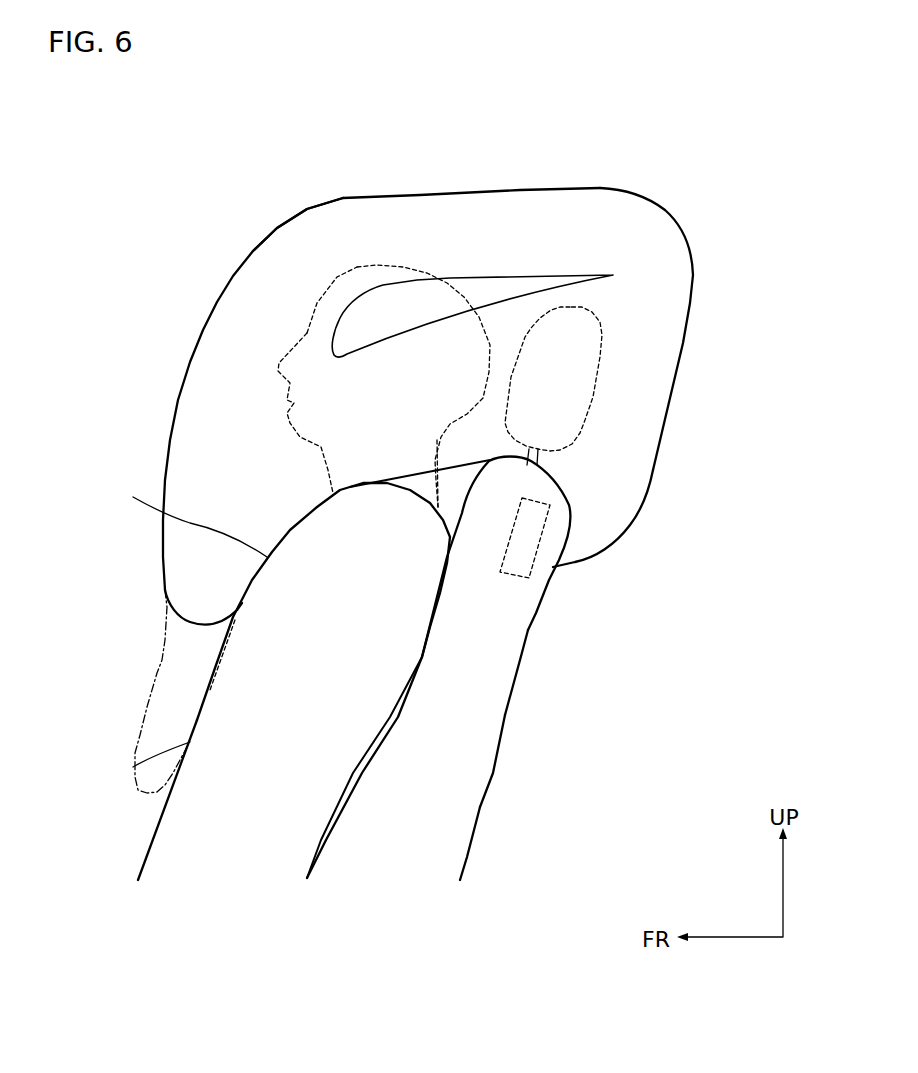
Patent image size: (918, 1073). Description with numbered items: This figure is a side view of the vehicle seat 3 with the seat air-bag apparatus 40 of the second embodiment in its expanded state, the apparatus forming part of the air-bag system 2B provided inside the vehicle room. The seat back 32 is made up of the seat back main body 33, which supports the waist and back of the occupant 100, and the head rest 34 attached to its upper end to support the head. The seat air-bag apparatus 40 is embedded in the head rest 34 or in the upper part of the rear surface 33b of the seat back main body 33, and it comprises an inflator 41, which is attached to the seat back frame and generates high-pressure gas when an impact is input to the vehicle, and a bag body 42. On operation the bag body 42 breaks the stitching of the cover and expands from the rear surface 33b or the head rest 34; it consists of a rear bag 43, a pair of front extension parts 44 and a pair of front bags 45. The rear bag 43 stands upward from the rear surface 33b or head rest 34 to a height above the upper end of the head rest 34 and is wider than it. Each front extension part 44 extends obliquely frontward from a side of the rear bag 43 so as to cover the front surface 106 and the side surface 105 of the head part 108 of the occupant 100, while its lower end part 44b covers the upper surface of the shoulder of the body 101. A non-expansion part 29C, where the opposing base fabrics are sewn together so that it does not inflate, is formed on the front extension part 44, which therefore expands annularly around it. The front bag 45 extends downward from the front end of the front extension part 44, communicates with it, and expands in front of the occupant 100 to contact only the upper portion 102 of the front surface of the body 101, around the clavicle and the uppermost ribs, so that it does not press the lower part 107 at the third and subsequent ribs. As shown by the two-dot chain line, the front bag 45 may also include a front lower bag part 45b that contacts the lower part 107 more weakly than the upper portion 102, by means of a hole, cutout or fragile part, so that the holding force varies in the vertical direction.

The air-bag system 2B is at (269, 195).
The vehicle seat 3 is at (532, 672).
The non-expansion part 29C is at (525, 287).
The seat back 32 is at (467, 853).
The seat back main body 33 is at (480, 807).
The rear surface 33b is at (510, 693).
The head rest 34 is at (593, 377).
The seat air-bag apparatus 40 is at (598, 180).
The inflator 41 is at (543, 537).
The bag body 42 is at (692, 255).
The rear bag 43 is at (660, 203).
The front extension part 44 is at (470, 190).
The lower end part 44b is at (450, 470).
The front bag 45 is at (193, 575).
The front lower bag part 45b is at (135, 788).
The occupant 100 is at (183, 713).
The body 101 is at (152, 840).
The upper portion 102 is at (177, 521).
The side surface 105 is at (385, 313).
The front surface 106 is at (307, 330).
The lower part 107 is at (133, 767).
The head part 108 is at (370, 267).